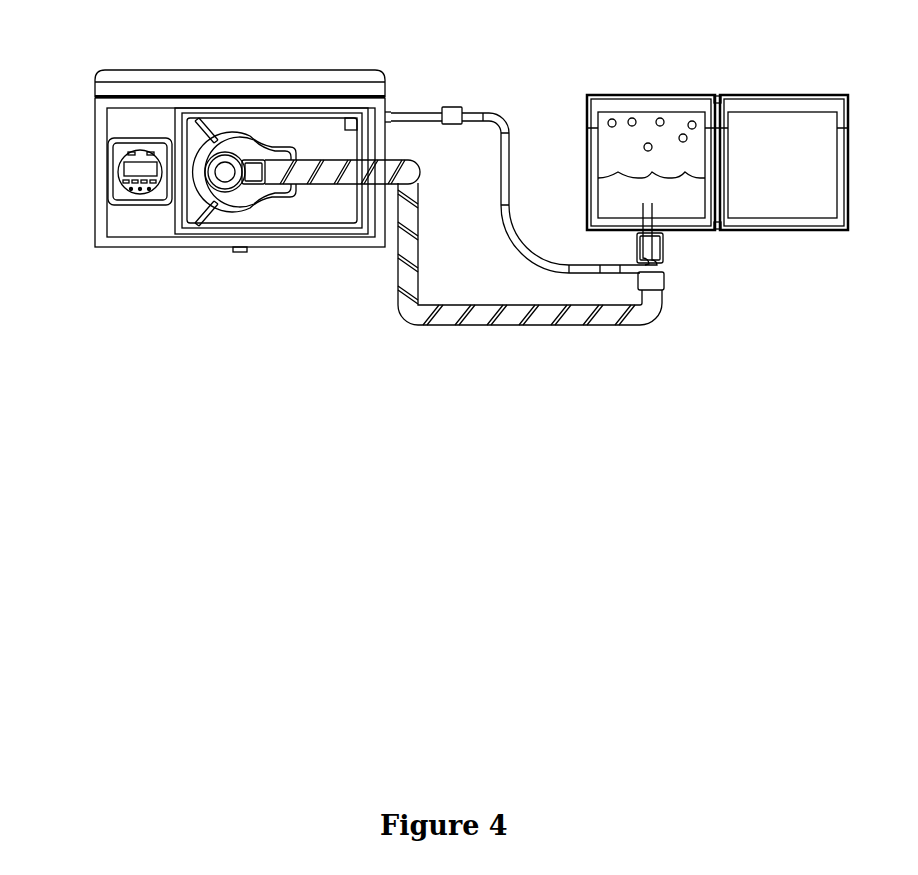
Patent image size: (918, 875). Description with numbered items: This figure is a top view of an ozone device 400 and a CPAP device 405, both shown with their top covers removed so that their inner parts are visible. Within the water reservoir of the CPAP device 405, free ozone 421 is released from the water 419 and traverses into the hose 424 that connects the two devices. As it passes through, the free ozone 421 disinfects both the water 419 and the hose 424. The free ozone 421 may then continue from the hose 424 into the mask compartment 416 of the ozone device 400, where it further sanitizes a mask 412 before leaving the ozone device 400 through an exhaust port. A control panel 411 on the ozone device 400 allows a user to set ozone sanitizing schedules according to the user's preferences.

The ozone device 400 is at (230, 200).
The control panel 411 is at (122, 172).
The mask 412 is at (224, 138).
The mask compartment 416 is at (333, 200).
The water 419 is at (693, 200).
The free ozone 421 is at (661, 112).
The hose 424 is at (525, 327).
The CPAP device 405 is at (741, 222).